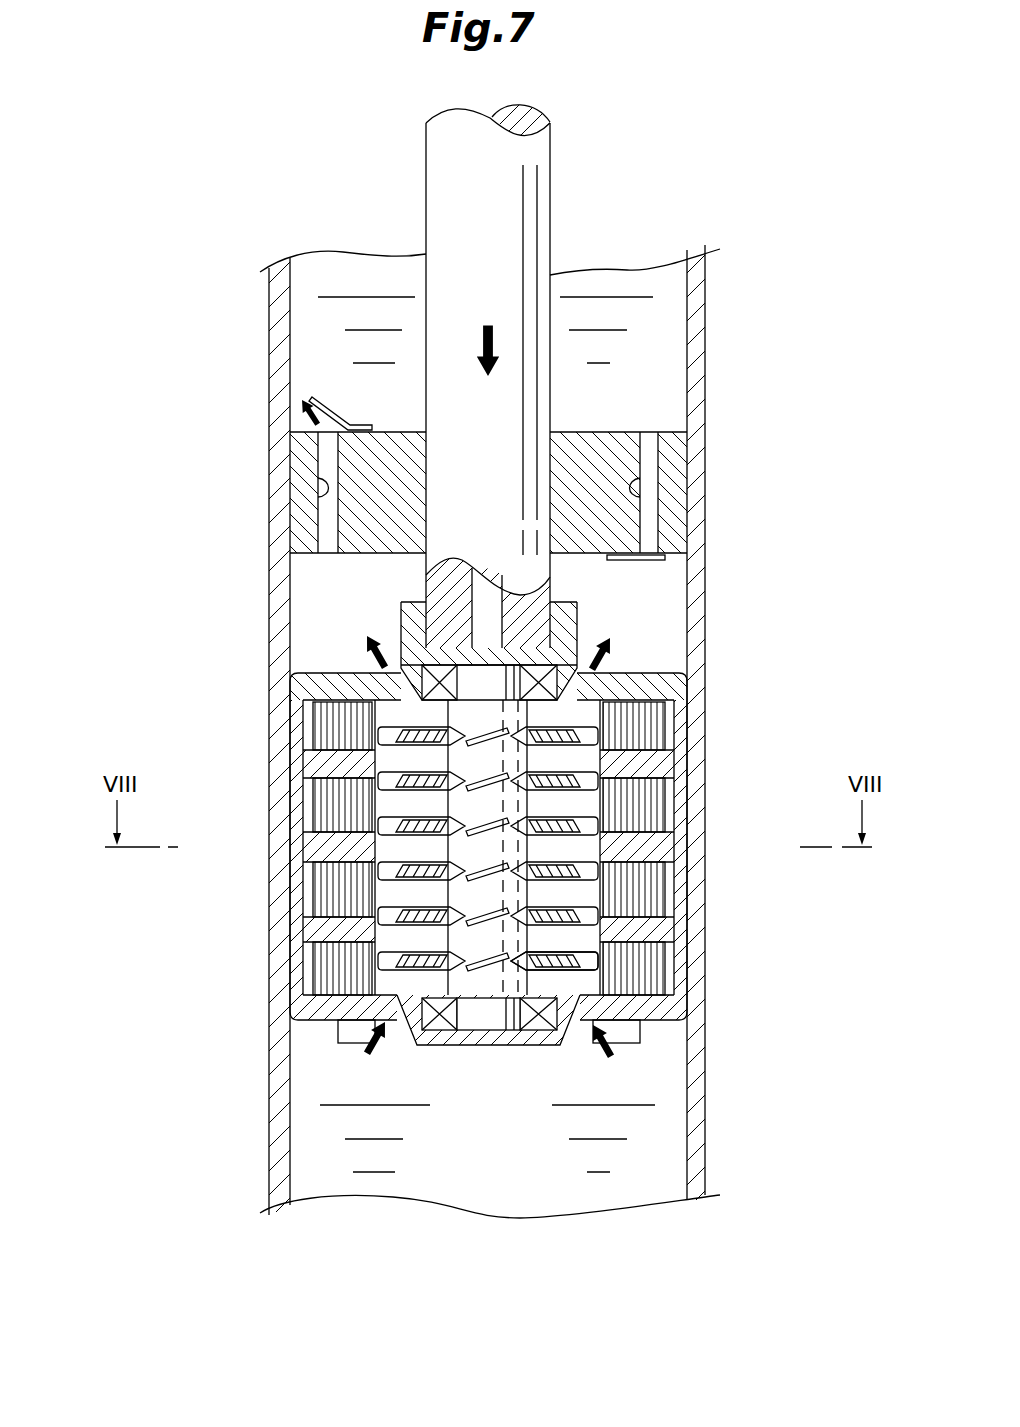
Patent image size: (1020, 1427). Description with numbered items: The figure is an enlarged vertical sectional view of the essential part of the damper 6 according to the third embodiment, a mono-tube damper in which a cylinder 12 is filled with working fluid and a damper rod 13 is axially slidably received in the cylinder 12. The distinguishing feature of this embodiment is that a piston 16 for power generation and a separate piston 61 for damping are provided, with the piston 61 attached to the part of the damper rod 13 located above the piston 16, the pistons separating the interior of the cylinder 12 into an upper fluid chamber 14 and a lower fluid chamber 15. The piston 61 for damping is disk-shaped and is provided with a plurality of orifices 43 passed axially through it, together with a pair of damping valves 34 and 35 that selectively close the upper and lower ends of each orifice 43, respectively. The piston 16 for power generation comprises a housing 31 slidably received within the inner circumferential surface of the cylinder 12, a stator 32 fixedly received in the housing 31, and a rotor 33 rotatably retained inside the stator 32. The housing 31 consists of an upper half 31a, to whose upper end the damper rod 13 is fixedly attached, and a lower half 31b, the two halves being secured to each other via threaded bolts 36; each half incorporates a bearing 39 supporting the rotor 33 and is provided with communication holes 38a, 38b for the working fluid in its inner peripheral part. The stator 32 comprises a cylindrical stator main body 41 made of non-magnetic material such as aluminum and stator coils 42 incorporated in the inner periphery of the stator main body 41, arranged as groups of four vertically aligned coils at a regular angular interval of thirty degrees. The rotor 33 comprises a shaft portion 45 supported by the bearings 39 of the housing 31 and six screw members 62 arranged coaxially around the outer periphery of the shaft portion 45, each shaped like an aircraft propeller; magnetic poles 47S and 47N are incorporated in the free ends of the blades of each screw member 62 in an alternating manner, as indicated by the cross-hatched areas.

The damper 6 is at (446, 661).
The cylinder 12 is at (278, 1110).
The damper rod 13 is at (548, 208).
The upper fluid chamber 14 is at (660, 282).
The lower fluid chamber 15 is at (665, 1147).
The piston for power generation 16 is at (493, 492).
The housing 31 is at (540, 967).
The upper half 31a is at (678, 772).
The lower half 31b is at (675, 1005).
The stator 32 is at (678, 832).
The rotor 33 is at (600, 932).
The damping valve 34 is at (324, 394).
The damping valve 35 is at (660, 560).
The threaded bolts 36 is at (628, 1037).
The communication holes 38a is at (590, 695).
The communication holes 38b is at (583, 1012).
The bearing 39 is at (400, 668).
The stator main body 41 is at (308, 852).
The stator coils 42 is at (318, 800).
The orifices 43 is at (320, 492).
The shaft portion 45 is at (375, 765).
The magnetic poles (N poles) 47N is at (547, 965).
The magnetic poles (S poles) 47S is at (445, 1032).
The piston for damping 61 is at (668, 428).
The screw members 62 is at (372, 925).